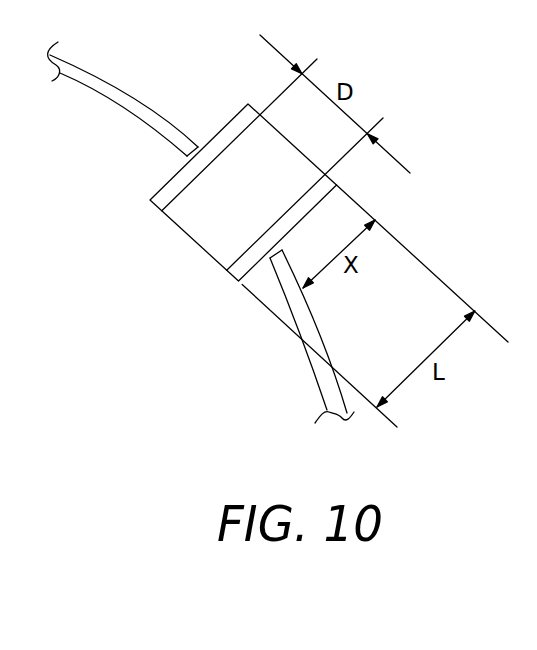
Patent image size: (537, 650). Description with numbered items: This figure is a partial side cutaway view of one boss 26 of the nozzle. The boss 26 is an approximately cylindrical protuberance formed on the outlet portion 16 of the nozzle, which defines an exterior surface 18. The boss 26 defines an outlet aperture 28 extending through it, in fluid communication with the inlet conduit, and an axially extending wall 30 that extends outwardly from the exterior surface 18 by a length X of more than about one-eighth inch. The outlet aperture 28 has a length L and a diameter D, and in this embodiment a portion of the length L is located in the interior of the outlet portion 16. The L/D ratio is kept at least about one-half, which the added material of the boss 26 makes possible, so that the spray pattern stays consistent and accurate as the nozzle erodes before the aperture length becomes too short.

The outlet portion 16 is at (308, 366).
The exterior surface 18 is at (104, 79).
The boss 26 is at (266, 168).
The outlet aperture 28 is at (286, 149).
The axially extending wall 30 is at (329, 183).